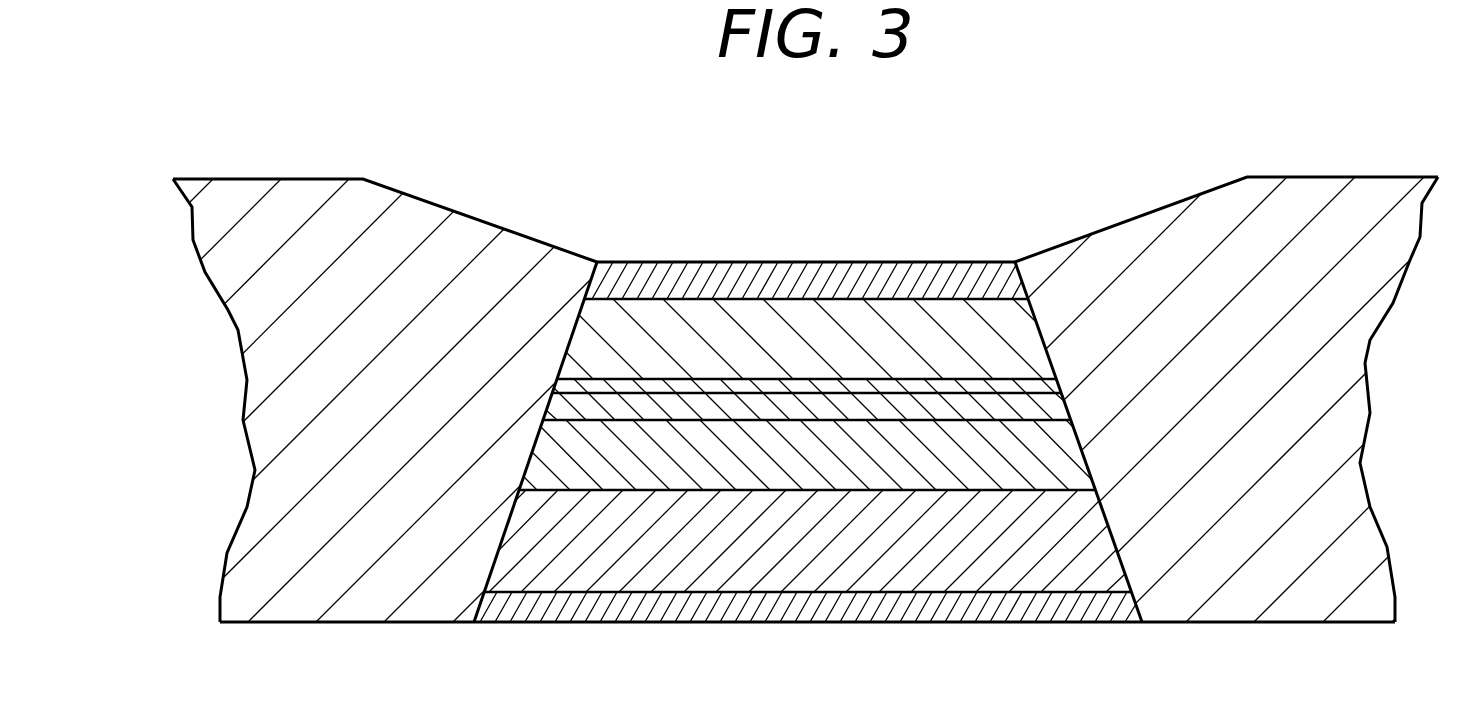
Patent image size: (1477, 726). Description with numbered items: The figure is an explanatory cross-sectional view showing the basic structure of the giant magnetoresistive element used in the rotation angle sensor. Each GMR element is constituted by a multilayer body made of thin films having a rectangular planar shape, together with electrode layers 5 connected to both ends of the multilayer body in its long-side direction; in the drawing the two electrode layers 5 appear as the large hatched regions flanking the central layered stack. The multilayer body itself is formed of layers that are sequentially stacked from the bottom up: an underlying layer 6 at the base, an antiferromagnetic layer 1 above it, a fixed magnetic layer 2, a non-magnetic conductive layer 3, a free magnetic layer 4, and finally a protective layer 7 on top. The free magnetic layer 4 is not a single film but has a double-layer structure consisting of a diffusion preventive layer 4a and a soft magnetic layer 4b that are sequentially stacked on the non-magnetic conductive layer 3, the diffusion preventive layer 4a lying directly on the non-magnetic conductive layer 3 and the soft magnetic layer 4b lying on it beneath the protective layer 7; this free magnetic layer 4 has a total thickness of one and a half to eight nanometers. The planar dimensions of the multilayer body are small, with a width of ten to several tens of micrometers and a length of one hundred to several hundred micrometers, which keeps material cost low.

The antiferromagnetic layer 1 is at (603, 545).
The fixed magnetic layer 2 is at (965, 455).
The non-magnetic conductive layer 3 is at (893, 400).
The free magnetic layer 4 is at (697, 212).
The diffusion preventive layer 4a is at (683, 387).
The soft magnetic layer 4b is at (630, 347).
The electrode layers 5 is at (313, 207).
The underlying layer 6 is at (712, 603).
The protective layer 7 is at (835, 290).